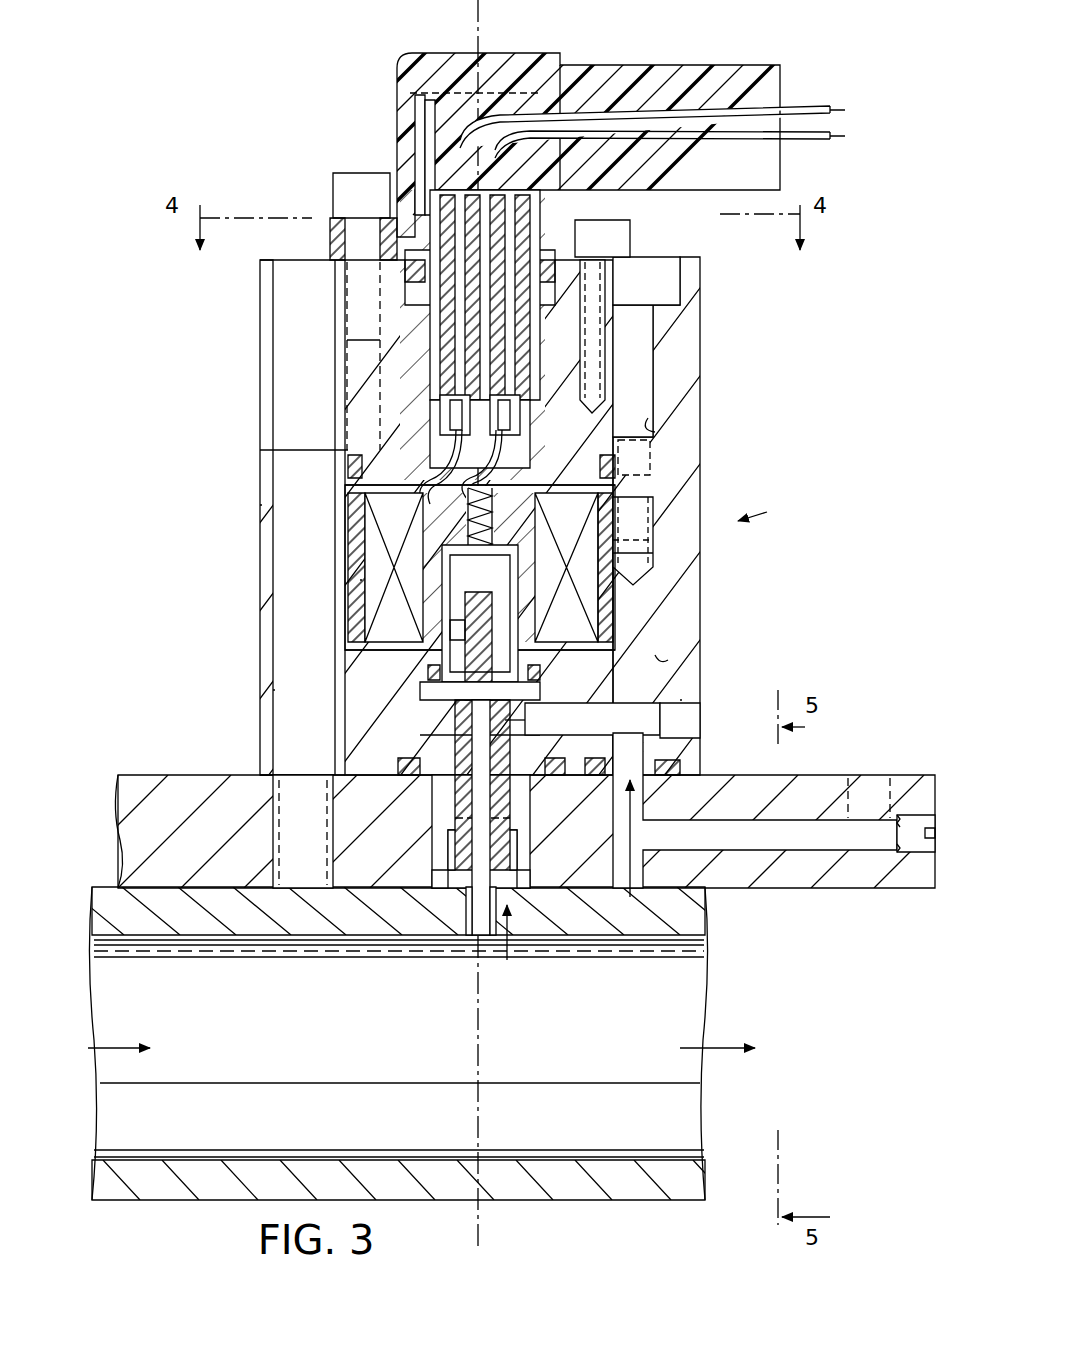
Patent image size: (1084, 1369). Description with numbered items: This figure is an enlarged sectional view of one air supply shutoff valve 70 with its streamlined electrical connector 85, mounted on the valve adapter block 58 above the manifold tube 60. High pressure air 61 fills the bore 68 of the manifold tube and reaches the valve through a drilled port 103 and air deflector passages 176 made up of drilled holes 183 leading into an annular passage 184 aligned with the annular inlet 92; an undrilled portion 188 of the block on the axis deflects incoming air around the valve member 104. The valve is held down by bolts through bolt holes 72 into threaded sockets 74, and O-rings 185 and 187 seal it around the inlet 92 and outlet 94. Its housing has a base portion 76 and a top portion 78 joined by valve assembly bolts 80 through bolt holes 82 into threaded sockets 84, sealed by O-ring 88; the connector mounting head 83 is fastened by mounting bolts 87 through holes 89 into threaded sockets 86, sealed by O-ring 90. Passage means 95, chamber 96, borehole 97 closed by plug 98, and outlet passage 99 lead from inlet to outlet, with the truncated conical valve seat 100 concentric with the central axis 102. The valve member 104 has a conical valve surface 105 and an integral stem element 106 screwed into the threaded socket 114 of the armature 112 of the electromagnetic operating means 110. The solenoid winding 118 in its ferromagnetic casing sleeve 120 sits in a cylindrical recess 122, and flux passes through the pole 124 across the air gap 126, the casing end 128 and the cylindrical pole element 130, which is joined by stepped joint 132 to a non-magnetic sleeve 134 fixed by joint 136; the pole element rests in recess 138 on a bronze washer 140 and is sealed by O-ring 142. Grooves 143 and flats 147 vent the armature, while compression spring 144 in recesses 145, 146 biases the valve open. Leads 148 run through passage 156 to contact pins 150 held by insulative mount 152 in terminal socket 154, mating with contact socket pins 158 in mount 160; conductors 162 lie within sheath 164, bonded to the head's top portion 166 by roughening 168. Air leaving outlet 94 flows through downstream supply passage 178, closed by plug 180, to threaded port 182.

The valve adapter block 58 is at (178, 775).
The manifold tube 60 is at (575, 1200).
The high pressure air 61 is at (95, 1046).
The bore of manifold tube 68 is at (377, 1067).
The shutoff valve 70 is at (766, 512).
The bolt hole 72 is at (267, 548).
The threaded socket 74 is at (300, 782).
The housing base portion 76 is at (690, 612).
The housing top portion 78 is at (688, 392).
The valve assembly bolt 80 is at (640, 362).
The bolt hole 82 is at (655, 428).
The connector mounting head 83 is at (330, 252).
The threaded socket 84 is at (650, 490).
The streamlined electrical connector 85 is at (395, 72).
The threaded socket 86 is at (347, 300).
The mounting bolt 87 is at (360, 180).
The O-ring 88 is at (348, 463).
The hole 89 is at (333, 250).
The O-ring 90 is at (385, 300).
The annular inlet 92 is at (432, 800).
The outlet 94 is at (615, 852).
The passage means 95 is at (440, 740).
The chamber 96 is at (430, 690).
The borehole 97 is at (685, 701).
The plug 98 is at (692, 721).
The outlet passage 99 is at (650, 746).
The valve seat 100 is at (455, 712).
The longitudinal central axis 102 is at (476, 24).
The drilled port 103 is at (485, 940).
The valve member 104 is at (592, 719).
The valve surface 105 is at (466, 895).
The stem element 106 is at (505, 721).
The electromagnetic operating means 110 is at (275, 600).
The armature 112 is at (465, 620).
The threaded socket 114 is at (445, 662).
The solenoid winding 118 is at (275, 570).
The casing sleeve 120 is at (262, 522).
The cylindrical recess 122 is at (262, 506).
The ferromagnetic pole 124 is at (535, 518).
The air gap 126 is at (633, 495).
The annular casing end 128 is at (660, 660).
The cylindrical pole element 130 is at (635, 572).
The annular stepped joint 132 is at (635, 532).
The sleeve 134 is at (636, 532).
The annular stepped joint 136 is at (352, 560).
The cylindrical recess 138 is at (272, 691).
The washer 140 is at (540, 642).
The O-ring 142 is at (428, 673).
The groove 143 is at (492, 520).
The compression spring 144 is at (360, 581).
The axial recess 145 is at (445, 633).
The axial recess 146 is at (428, 500).
The flat 147 is at (445, 631).
The lead 148 is at (420, 456).
The contact pin 150 is at (470, 378).
The insulative mount 152 is at (455, 396).
The terminal socket 154 is at (552, 412).
The passage 156 is at (482, 480).
The contact socket pin 158 is at (525, 200).
The insulative mount 160 is at (580, 254).
The insulated electrical conductor 162 is at (650, 128).
The streamlined sheath 164 is at (592, 78).
The top portion 166 is at (418, 100).
The external roughening 168 is at (428, 120).
The air deflector passage 176 is at (512, 948).
The downstream supply passage 178 is at (775, 850).
The plug 180 is at (912, 852).
The threaded port 182 is at (850, 792).
The drilled hole 183 is at (445, 876).
The annular passage 184 is at (440, 840).
The O-ring 185 is at (400, 772).
The O-ring 187 is at (680, 767).
The undrilled portion 188 is at (520, 812).